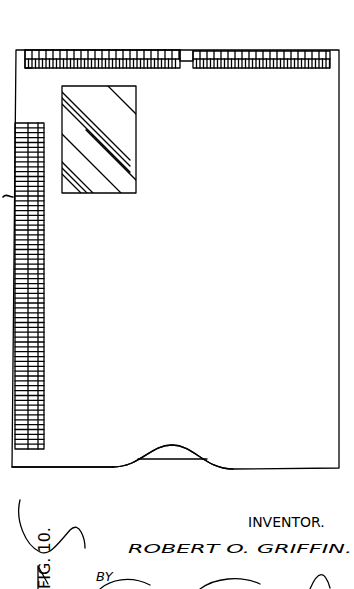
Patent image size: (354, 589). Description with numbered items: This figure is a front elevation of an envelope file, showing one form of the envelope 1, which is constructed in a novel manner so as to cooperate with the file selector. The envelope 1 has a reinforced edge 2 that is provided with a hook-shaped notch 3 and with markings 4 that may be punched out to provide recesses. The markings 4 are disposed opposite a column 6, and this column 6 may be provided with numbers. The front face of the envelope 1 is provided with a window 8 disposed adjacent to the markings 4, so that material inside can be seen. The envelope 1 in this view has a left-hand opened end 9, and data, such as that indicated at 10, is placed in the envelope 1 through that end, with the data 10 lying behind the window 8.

The envelope 1 is at (340, 276).
The reinforced edge 2 is at (71, 51).
The hook-shaped notch 3 is at (185, 56).
The markings 4 is at (285, 51).
The column 6 is at (27, 56).
The window 8 is at (127, 152).
The left-hand opened end 9 is at (100, 470).
The data 10 is at (170, 452).